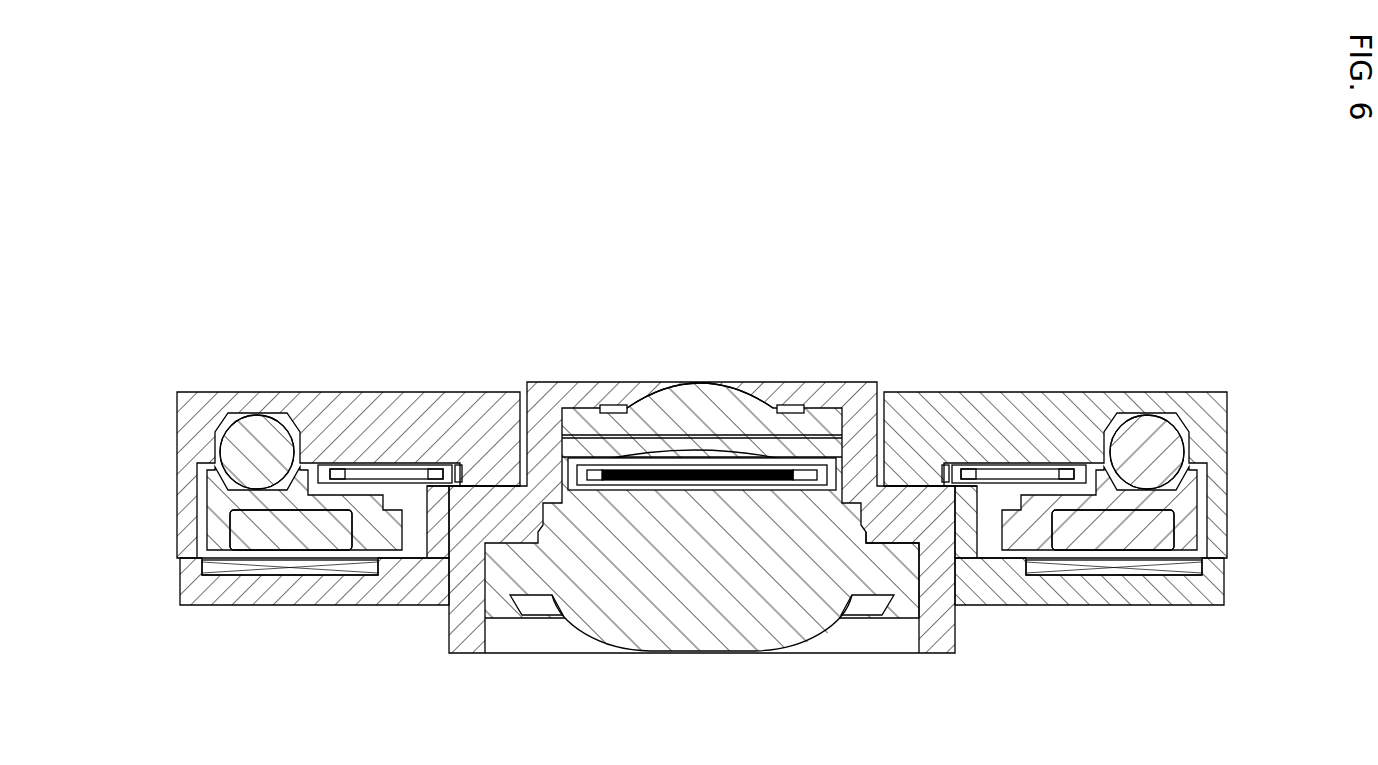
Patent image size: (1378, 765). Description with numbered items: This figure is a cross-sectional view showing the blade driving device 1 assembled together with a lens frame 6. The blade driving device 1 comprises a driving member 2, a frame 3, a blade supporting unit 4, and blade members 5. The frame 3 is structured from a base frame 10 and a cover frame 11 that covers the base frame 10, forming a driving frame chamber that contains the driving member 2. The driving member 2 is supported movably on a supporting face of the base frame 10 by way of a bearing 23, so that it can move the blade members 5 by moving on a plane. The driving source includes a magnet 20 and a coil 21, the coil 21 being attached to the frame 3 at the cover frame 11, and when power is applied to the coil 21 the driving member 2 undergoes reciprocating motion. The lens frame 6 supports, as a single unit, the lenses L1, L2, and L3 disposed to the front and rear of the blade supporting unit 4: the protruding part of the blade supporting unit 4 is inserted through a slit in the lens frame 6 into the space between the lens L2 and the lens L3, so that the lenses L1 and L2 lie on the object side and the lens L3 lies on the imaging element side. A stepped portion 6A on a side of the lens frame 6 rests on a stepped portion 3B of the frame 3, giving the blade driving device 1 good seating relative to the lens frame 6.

The blade driving device 1 is at (1222, 335).
The driving member 2 is at (205, 493).
The frame 3 is at (643, 533).
The stepped portion 3B is at (886, 500).
The blade supporting unit 4 is at (838, 470).
The blade members 5 is at (797, 474).
The lens frame 6 is at (449, 625).
The stepped portion 6A is at (921, 487).
The base frame 10 is at (176, 444).
The cover frame 11 is at (180, 583).
The magnet 20 is at (255, 547).
The coil 21 is at (310, 572).
The bearing 23 is at (279, 437).
The lens L1 is at (742, 387).
The lens L2 is at (660, 455).
The lens L3 is at (570, 625).